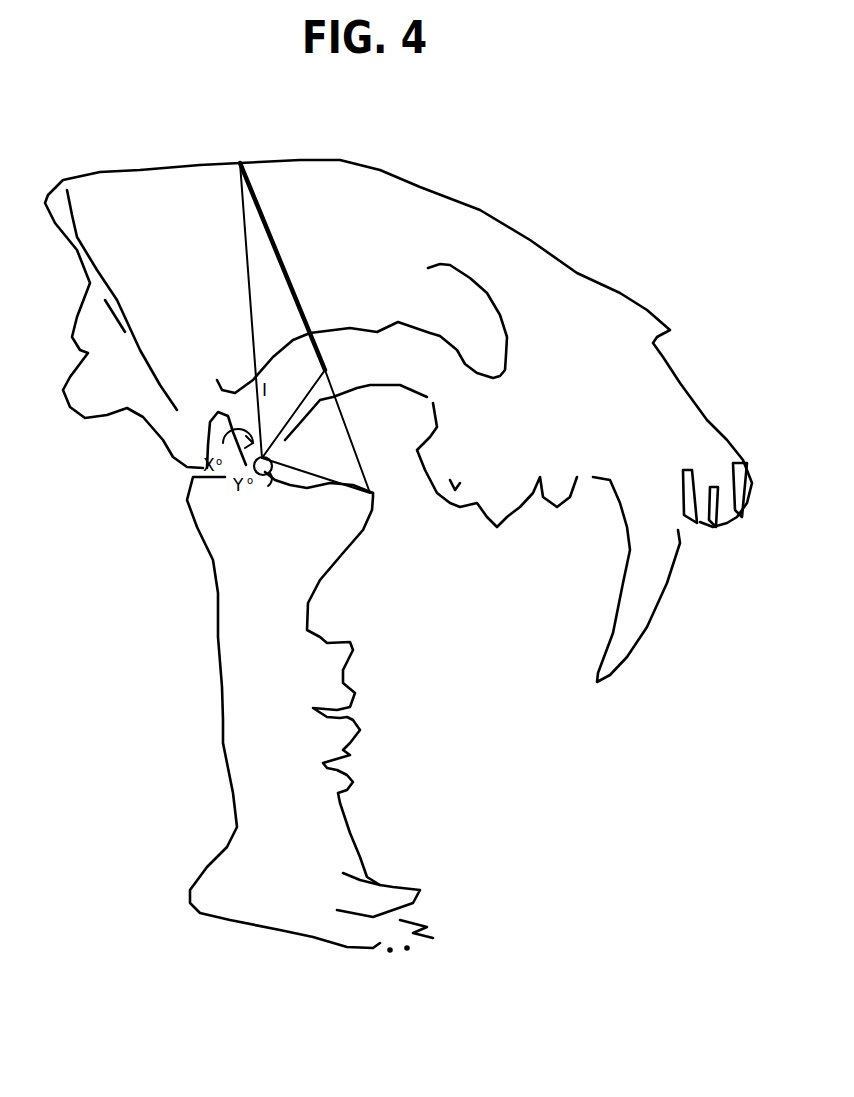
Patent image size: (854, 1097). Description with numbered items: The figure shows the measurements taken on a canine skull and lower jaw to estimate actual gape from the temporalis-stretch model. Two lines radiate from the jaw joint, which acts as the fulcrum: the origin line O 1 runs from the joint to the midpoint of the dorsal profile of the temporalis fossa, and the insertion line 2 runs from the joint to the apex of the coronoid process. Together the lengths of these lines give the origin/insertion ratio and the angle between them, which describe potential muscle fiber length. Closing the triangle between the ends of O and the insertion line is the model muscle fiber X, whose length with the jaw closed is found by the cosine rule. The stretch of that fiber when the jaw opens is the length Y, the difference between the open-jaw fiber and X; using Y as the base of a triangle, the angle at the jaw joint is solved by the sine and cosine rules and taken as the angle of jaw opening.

The skull axis line from cranium top to jaw joint 1 is at (255, 310).
The mandible axis line from jaw joint to coronoid 2 is at (316, 463).
The model muscle fiber with jaw closed X is at (272, 266).
The difference between the length of X' and X Y is at (356, 412).
The fulcrum to muscle origin line O is at (261, 359).